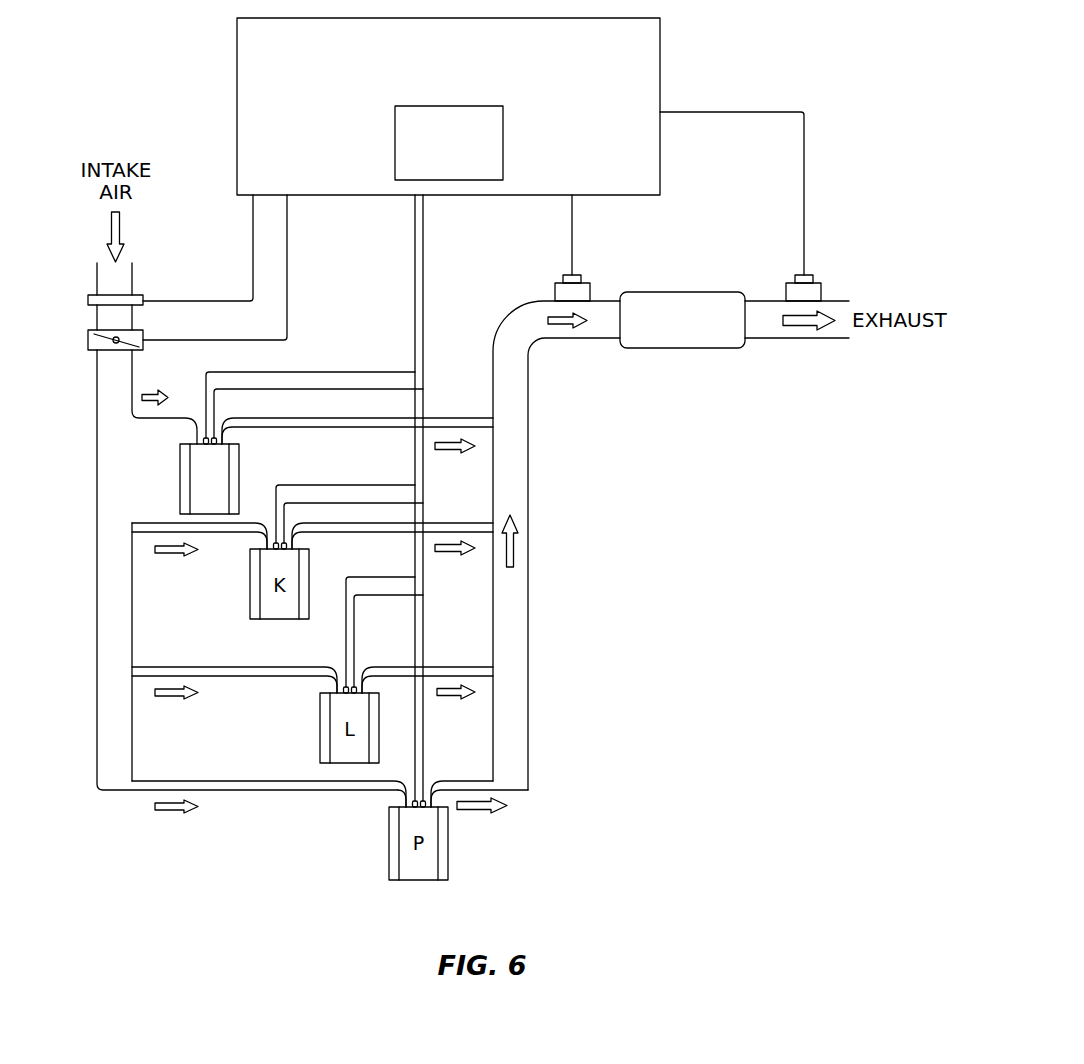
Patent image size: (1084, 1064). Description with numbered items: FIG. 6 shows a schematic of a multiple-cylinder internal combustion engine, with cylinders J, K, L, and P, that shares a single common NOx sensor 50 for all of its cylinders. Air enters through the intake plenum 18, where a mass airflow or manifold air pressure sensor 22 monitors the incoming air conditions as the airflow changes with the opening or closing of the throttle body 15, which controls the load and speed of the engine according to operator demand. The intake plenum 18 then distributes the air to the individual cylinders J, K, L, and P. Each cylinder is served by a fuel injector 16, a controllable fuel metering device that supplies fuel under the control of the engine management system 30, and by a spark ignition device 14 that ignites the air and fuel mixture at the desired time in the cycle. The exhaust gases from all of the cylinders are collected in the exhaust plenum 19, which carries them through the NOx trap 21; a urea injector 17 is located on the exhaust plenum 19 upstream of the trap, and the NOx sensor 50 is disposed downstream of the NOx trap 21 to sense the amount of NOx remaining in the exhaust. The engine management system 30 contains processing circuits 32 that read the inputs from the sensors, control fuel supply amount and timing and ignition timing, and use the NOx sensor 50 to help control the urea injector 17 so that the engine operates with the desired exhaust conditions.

The engine management system 30 is at (448, 106).
The processing circuits 32 is at (449, 453).
The mass airflow sensor or manifold air pressure sensor 22 is at (145, 297).
The throttle body 15 is at (86, 340).
The intake plenum 18 is at (117, 603).
The spark ignition device 14 is at (203, 442).
The fuel injector 16 is at (210, 442).
The exhaust plenum 19 is at (517, 463).
The urea injector 17 is at (592, 290).
The NOx trap 21 is at (707, 350).
The NOx sensor 50 is at (822, 290).